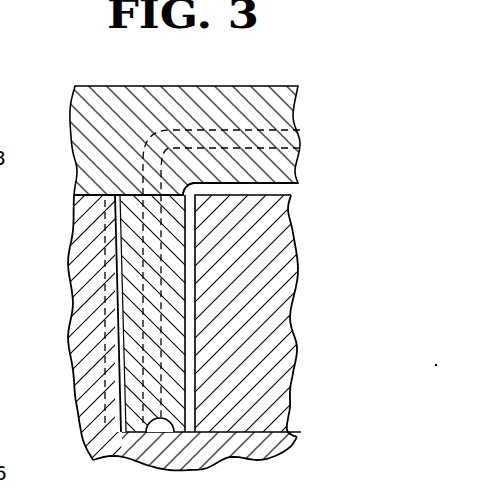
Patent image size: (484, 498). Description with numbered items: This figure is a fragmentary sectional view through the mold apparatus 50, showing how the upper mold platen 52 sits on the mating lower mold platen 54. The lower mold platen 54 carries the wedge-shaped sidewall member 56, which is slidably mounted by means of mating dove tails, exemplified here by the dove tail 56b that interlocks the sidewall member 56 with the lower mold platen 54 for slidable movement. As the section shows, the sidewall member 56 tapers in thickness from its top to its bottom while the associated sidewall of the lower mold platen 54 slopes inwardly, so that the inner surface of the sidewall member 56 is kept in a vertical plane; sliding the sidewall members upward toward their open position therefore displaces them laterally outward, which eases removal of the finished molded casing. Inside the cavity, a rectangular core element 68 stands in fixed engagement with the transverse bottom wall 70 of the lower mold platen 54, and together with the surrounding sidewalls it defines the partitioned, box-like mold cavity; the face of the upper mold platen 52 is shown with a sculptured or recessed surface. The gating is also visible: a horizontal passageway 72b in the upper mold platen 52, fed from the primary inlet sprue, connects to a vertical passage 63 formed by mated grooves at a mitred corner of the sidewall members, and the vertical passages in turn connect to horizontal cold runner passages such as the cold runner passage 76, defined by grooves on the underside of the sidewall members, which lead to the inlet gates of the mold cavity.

The mold apparatus 50 is at (304, 236).
The upper mold platen 52 is at (256, 86).
The lower mold platen 54 is at (97, 398).
The sidewall member 56 is at (116, 294).
The dove tail 56b is at (104, 250).
The vertical passage 63 is at (147, 323).
The core element 68 is at (280, 350).
The transverse bottom wall 70 is at (247, 432).
The horizontal passageway 72b is at (290, 147).
The horizontal cold runner passage 76 is at (160, 431).